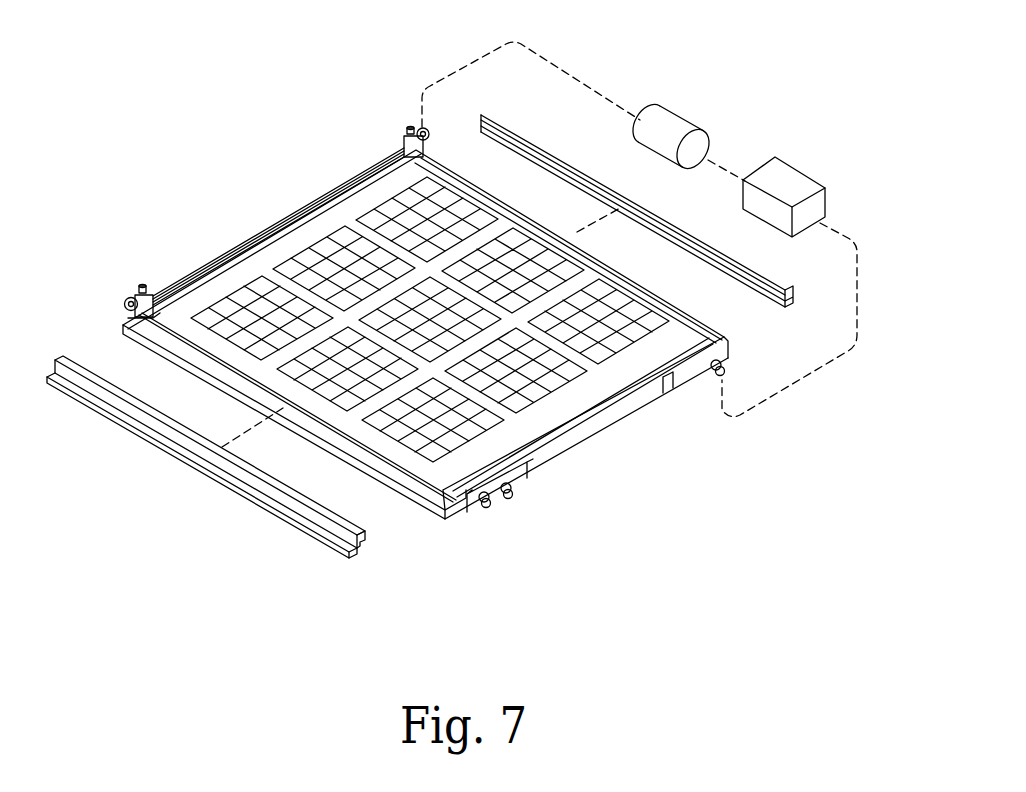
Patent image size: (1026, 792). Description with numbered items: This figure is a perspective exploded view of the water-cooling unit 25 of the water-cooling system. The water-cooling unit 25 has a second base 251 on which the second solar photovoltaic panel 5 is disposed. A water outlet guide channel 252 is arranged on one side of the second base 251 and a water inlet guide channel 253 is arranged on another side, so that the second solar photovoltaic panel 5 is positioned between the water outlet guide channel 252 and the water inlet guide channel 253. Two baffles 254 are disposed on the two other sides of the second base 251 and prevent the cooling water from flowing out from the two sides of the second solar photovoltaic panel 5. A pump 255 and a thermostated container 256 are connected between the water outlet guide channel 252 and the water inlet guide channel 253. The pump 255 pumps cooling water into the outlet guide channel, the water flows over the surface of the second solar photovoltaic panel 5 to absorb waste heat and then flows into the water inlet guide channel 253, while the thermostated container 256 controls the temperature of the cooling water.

The second solar photovoltaic panel 5 is at (258, 262).
The water-cooling unit 25 is at (378, 155).
The second base 251 is at (407, 500).
The water outlet guide channel 252 is at (320, 203).
The water inlet guide channel 253 is at (647, 383).
The baffles 254 is at (552, 155).
The pump 255 is at (672, 128).
The thermostated container 256 is at (787, 173).